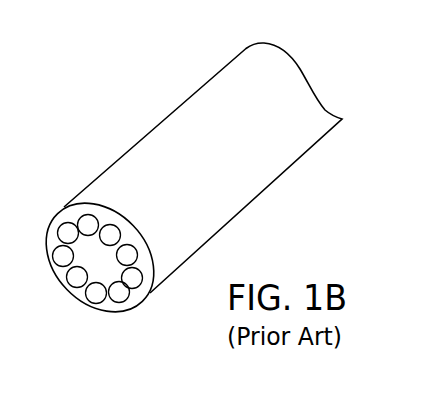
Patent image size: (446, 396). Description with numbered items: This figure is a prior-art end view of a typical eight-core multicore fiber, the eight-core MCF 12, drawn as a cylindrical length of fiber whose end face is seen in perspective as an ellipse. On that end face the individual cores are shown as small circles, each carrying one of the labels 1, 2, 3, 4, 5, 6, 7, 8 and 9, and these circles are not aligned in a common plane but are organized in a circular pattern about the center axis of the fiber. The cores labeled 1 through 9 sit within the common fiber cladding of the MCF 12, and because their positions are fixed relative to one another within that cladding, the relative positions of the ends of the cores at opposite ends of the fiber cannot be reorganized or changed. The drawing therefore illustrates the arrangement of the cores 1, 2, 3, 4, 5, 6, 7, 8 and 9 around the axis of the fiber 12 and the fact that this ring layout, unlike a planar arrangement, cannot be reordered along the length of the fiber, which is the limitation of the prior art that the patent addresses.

The eight-core MCF 12 is at (252, 213).
The optical fiber 1 is at (88, 225).
The optical fiber 2 is at (110, 235).
The optical fiber 3 is at (127, 255).
The optical fiber 4 is at (132, 278).
The optical fiber 5 is at (119, 292).
The optical fiber 6 is at (96, 293).
The optical fiber 7 is at (77, 277).
The optical fiber 8 is at (63, 256).
The optical fiber 9 is at (68, 233).